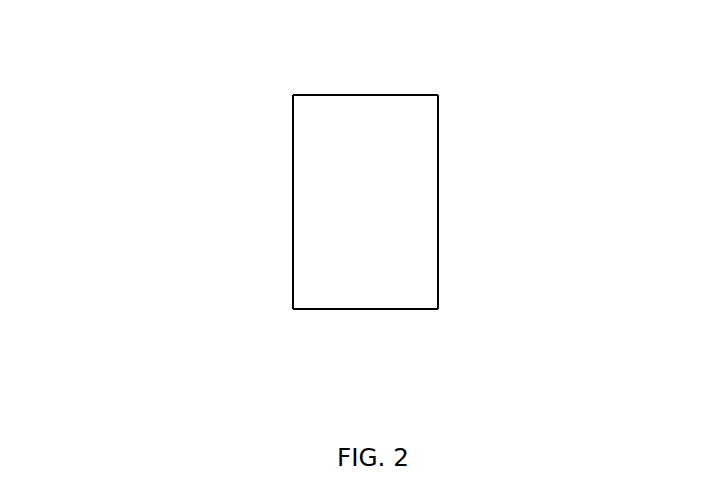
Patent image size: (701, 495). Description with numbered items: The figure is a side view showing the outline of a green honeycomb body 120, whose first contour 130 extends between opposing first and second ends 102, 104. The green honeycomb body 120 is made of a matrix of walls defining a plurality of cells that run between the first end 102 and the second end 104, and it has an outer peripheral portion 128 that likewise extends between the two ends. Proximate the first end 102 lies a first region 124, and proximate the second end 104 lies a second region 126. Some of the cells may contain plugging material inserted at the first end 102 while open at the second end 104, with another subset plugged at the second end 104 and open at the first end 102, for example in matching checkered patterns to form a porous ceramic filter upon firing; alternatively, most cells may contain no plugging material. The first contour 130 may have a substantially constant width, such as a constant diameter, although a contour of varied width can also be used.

The first end 102 is at (385, 310).
The second end 104 is at (385, 95).
The green honeycomb body 120 is at (172, 230).
The first region 124 is at (412, 294).
The second region 126 is at (412, 122).
The outer peripheral portion 128 is at (412, 215).
The first contour 130 is at (282, 154).